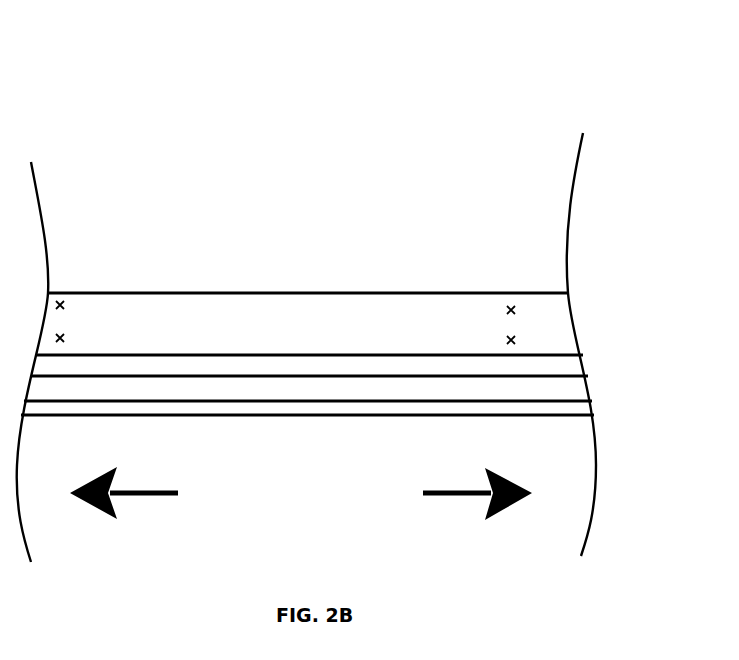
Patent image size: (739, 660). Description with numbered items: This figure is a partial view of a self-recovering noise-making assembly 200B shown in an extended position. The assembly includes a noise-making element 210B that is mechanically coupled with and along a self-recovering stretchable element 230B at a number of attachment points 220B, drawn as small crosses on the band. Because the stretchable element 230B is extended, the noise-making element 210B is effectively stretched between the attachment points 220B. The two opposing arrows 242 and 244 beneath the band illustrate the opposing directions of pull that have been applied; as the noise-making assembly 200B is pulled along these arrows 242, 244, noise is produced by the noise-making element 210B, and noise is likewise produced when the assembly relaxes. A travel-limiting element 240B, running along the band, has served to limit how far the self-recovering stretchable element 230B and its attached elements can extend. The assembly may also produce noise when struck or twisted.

The self-recovering noise-making assembly 200B is at (444, 66).
The noise-making element 210B is at (565, 366).
The attachment points 220B is at (64, 337).
The self-recovering stretchable element 230B is at (553, 389).
The travel-limiting element 240B is at (577, 409).
The arrow 242 is at (153, 497).
The arrow 244 is at (466, 498).